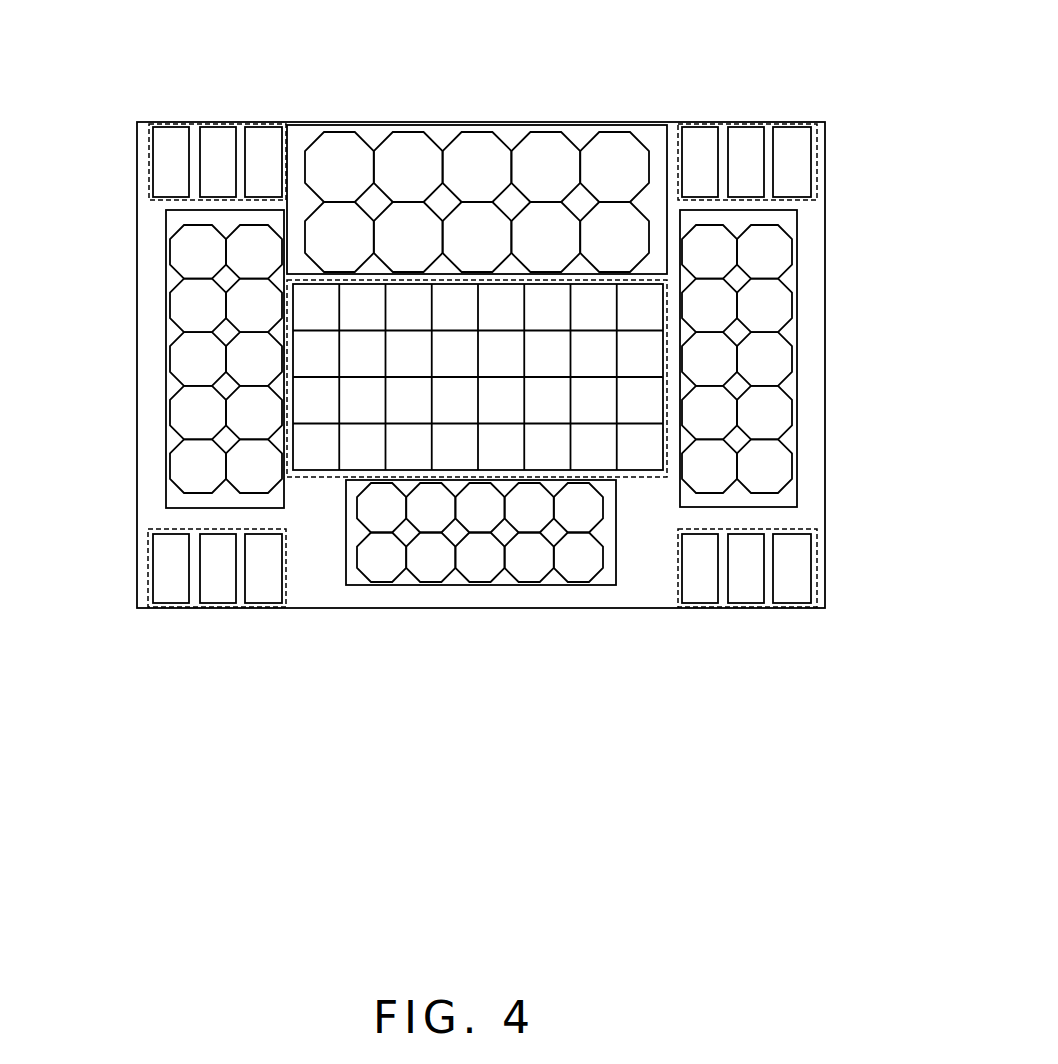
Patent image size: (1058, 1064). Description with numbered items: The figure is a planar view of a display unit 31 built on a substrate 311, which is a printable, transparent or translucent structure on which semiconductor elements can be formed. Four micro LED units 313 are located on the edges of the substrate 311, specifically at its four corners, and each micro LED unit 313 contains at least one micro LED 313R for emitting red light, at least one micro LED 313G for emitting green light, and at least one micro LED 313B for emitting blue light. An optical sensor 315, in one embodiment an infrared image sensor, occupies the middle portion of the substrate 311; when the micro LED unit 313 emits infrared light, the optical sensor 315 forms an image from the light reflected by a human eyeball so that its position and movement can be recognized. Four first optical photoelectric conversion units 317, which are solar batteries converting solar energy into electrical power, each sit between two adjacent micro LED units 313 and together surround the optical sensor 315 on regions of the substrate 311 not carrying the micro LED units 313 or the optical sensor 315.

The display unit 31 is at (445, 62).
The substrate 311 is at (528, 600).
The micro light emitting diode unit 313 is at (149, 150).
The micro LED for emitting red light 313R is at (163, 135).
The micro LED for emitting green light 313G is at (213, 135).
The micro LED for emitting blue light 313B is at (272, 140).
The optical sensor 315 is at (667, 310).
The first optical photoelectric conversion unit 317 is at (658, 137).